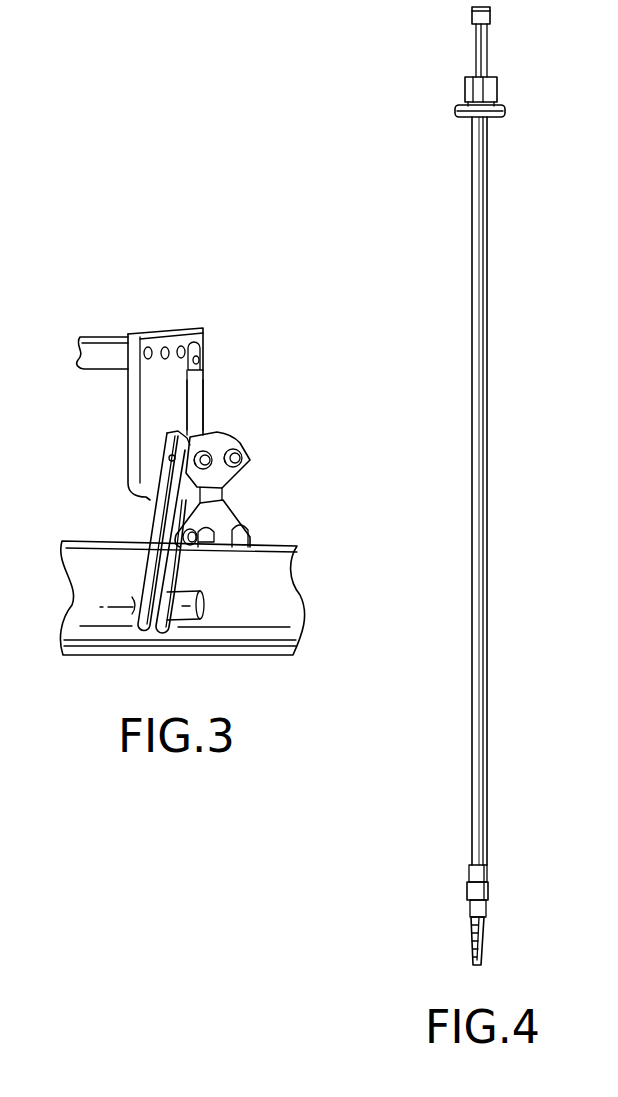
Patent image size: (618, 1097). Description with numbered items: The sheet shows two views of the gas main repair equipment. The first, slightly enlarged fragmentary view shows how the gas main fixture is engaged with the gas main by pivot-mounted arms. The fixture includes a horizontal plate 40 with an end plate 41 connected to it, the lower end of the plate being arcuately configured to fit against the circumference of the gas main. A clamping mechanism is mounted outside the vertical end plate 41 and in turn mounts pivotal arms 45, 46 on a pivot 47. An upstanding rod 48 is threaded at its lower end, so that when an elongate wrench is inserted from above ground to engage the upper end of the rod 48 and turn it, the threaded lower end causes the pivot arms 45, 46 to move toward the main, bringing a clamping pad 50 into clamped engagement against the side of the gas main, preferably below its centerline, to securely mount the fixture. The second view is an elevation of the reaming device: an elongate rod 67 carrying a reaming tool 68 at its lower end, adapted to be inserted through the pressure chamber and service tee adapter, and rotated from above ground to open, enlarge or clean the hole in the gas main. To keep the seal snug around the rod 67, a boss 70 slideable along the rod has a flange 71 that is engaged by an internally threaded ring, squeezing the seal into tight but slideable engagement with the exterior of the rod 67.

In FIG. 3, the horizontal plate 40 is at (107, 335).
In FIG. 3, the end plate 41 is at (187, 327).
In FIG. 3, the pivotal arm 45 is at (239, 493).
In FIG. 3, the pivotal arm 46 is at (148, 508).
In FIG. 3, the pivot 47 is at (238, 451).
In FIG. 3, the upstanding rod 48 is at (204, 392).
In FIG. 3, the clamping pad 50 is at (205, 603).
In FIG. 4, the rod 67 is at (487, 480).
In FIG. 4, the reaming tool 68 is at (484, 937).
In FIG. 4, the boss 70 is at (497, 89).
In FIG. 4, the flange 71 is at (505, 111).